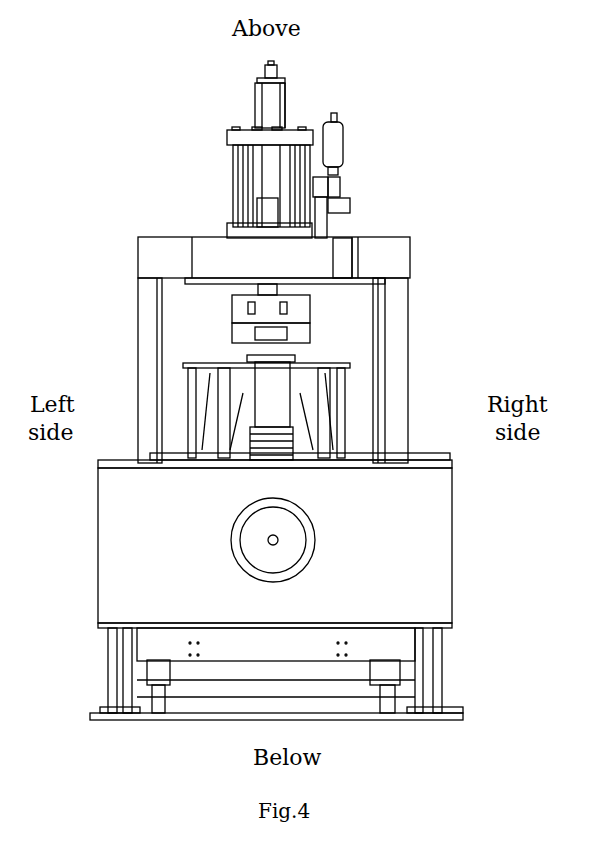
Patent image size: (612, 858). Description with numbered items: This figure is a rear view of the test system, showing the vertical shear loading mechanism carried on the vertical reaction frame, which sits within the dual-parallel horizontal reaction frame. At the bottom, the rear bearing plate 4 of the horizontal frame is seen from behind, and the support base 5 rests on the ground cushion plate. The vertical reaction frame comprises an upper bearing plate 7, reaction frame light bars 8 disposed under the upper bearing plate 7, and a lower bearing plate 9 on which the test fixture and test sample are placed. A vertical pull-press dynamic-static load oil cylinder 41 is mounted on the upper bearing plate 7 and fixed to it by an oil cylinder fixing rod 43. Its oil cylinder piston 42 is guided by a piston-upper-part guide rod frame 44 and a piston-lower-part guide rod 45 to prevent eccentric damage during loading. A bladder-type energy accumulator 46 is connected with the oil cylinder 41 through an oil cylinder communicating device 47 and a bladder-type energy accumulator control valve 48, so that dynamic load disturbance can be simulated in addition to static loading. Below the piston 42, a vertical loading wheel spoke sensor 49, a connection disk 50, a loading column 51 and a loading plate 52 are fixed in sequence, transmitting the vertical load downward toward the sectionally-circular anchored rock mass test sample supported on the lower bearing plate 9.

The rear bearing plate 4 is at (382, 555).
The support base 5 is at (427, 685).
The upper bearing plate 7 is at (383, 252).
The reaction frame light bar 8 is at (395, 330).
The lower bearing plate 9 is at (378, 647).
The vertical pull-press dynamic-static load oil cylinder 41 is at (282, 175).
The oil cylinder piston 42 is at (270, 107).
The oil cylinder fixing rod 43 is at (295, 197).
The piston-upper-part guide rod frame 44 is at (285, 107).
The piston-lower-part guide rod 45 is at (278, 230).
The bladder-type energy accumulator 46 is at (337, 142).
The oil cylinder communicating device 47 is at (320, 208).
The bladder-type energy accumulator control valve 48 is at (333, 202).
The vertical loading wheel spoke sensor 49 is at (295, 315).
The connection disk 50 is at (295, 335).
The loading column 51 is at (270, 393).
The loading plate 52 is at (270, 432).